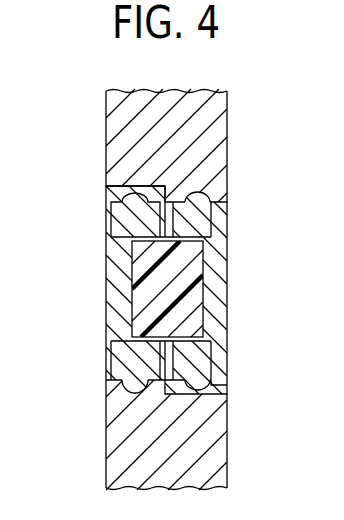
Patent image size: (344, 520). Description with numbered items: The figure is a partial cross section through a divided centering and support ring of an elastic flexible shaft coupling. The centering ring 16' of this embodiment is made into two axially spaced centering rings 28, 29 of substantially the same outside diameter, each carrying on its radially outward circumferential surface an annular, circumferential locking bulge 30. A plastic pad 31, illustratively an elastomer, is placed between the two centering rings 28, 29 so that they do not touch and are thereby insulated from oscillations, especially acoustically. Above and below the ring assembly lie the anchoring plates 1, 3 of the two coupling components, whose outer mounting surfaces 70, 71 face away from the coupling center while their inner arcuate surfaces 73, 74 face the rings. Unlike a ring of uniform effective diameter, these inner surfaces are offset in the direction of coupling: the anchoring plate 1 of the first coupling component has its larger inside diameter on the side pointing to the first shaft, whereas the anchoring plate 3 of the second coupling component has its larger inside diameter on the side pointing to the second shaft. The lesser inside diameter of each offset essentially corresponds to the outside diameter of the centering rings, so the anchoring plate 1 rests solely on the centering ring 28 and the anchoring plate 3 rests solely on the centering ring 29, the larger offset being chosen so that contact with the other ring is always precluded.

The anchoring plate 1 is at (208, 138).
The anchoring plate 3 is at (217, 453).
The centering ring 16' is at (175, 313).
The centering ring 28 is at (213, 347).
The centering ring 29 is at (112, 220).
The locking bulges 30 is at (204, 193).
The plastic pad 31 is at (143, 290).
The outer mounting surface 70 is at (228, 418).
The outer mounting surface 71 is at (106, 447).
The inner arcuate surface 73 is at (108, 193).
The inner arcuate surface 74 is at (226, 385).